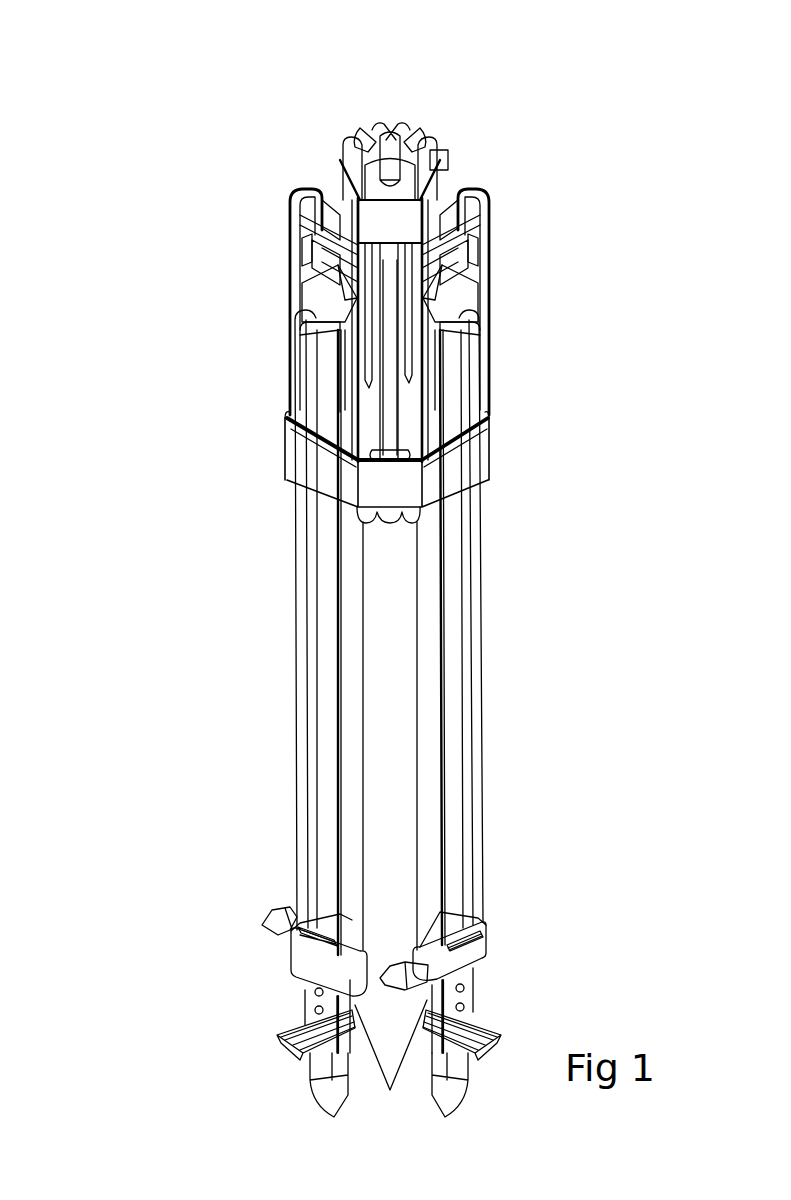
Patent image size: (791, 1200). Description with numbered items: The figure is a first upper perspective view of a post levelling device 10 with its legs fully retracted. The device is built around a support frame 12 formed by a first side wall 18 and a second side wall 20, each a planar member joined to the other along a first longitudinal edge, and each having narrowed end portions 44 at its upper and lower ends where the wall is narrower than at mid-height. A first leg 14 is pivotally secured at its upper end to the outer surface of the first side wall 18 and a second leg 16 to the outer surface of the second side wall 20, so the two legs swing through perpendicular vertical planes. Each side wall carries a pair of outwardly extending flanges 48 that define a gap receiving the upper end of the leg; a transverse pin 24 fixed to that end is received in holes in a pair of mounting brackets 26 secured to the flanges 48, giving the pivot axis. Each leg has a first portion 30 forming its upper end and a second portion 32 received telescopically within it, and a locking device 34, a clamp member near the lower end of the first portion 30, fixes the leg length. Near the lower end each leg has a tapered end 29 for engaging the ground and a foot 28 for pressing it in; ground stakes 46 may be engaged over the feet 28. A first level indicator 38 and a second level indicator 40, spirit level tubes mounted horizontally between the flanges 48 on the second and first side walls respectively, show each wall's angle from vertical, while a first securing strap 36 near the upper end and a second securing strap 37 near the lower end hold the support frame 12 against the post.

The post levelling device 10 is at (616, 319).
The support frame 12 is at (480, 188).
The first leg 14 is at (305, 600).
The second leg 16 is at (467, 665).
The first side wall 18 is at (313, 193).
The second side wall 20 is at (465, 188).
The transverse pin 24 is at (290, 277).
The mounting brackets 26 is at (290, 242).
The foot 28 is at (272, 1030).
The tapered end 29 is at (330, 1112).
The first portion 30 is at (317, 810).
The second portion 32 is at (391, 1065).
The locking device 34 is at (263, 915).
The first securing strap 36 is at (335, 200).
The second securing strap 37 is at (303, 464).
The first level indicator 38 is at (490, 223).
The second level indicator 40 is at (290, 222).
The narrowed end portions 44 is at (443, 140).
The ground stakes 46 is at (425, 135).
The flanges 48 is at (368, 406).